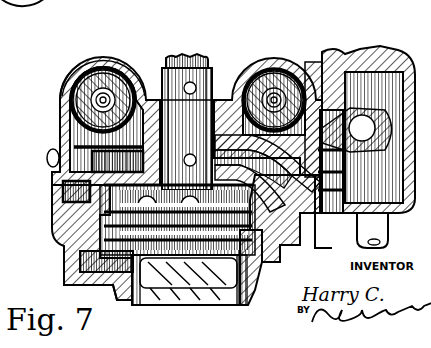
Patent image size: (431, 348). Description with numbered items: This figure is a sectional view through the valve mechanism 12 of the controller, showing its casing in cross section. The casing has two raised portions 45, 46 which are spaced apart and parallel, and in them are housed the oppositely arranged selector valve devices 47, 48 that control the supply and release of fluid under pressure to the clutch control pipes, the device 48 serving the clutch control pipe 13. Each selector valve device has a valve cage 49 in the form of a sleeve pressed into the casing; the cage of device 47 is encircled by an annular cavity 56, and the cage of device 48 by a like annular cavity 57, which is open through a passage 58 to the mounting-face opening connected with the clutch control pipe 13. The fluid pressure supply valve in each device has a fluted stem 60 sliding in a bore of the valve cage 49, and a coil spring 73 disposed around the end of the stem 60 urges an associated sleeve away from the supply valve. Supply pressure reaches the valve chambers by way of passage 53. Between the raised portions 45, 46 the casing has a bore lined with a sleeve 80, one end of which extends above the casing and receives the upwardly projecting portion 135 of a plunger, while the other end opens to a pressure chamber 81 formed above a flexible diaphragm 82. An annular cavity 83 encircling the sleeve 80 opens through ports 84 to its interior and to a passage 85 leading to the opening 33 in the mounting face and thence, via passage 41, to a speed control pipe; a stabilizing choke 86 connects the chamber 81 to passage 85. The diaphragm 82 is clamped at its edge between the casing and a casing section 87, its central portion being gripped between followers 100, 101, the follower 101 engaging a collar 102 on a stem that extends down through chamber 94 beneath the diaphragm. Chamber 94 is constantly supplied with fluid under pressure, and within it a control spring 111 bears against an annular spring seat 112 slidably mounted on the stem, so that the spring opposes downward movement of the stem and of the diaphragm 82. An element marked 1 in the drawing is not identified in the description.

The housing body 1 is at (388, 54).
The valve mechanism 12 is at (60, 130).
The clutch control pipe 13 is at (380, 232).
The opening 33 is at (330, 212).
The passage 41 is at (360, 80).
The raised portion 45 is at (278, 66).
The raised portion 46 is at (92, 62).
The selector valve device 47 is at (311, 120).
The selector valve device 48 is at (106, 70).
The valve cage 49 is at (76, 110).
The passage 53 is at (62, 193).
The annular cavity 56 is at (292, 68).
The annular cavity 57 is at (66, 86).
The passage 58 is at (92, 155).
The fluted stem 60 is at (112, 92).
The coil spring 73 is at (68, 96).
The sleeve 80 is at (213, 66).
The pressure chamber 81 is at (100, 200).
The flexible diaphragm 82 is at (100, 222).
The annular cavity 83 is at (181, 112).
The ports 84 is at (183, 169).
The passage 85 is at (262, 102).
The stabilizing choke 86 is at (267, 180).
The casing section 87 is at (248, 294).
The chamber 94 is at (136, 292).
The follower 100 is at (278, 252).
The follower 101 is at (266, 266).
The collar 102 is at (175, 290).
The control spring 111 is at (200, 298).
The annular spring seat 112 is at (118, 274).
The upwardly projecting portion 135 is at (188, 56).